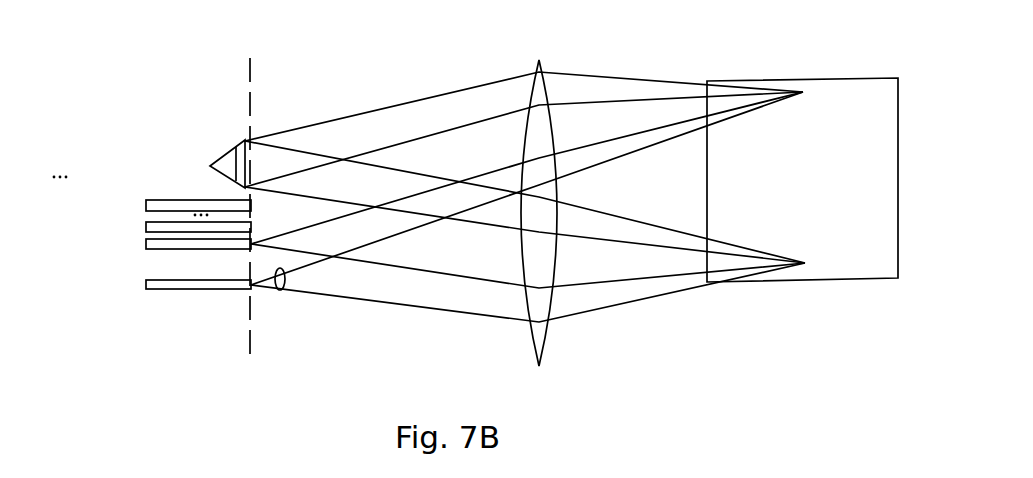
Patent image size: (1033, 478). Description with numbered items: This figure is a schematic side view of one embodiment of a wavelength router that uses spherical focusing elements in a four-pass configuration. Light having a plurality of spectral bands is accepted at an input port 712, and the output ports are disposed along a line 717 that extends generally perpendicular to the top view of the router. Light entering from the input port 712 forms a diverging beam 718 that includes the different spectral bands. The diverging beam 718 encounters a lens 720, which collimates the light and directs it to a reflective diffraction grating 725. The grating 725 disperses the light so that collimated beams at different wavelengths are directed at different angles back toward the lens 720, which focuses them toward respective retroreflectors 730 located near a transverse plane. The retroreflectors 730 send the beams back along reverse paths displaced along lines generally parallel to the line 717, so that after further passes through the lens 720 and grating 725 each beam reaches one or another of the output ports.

The input port 712 is at (255, 288).
The line 717 is at (252, 327).
The diverging beam 718 is at (285, 286).
The lens 720 is at (550, 347).
The reflective diffraction grating 725 is at (847, 80).
The retroreflector 730 is at (233, 148).